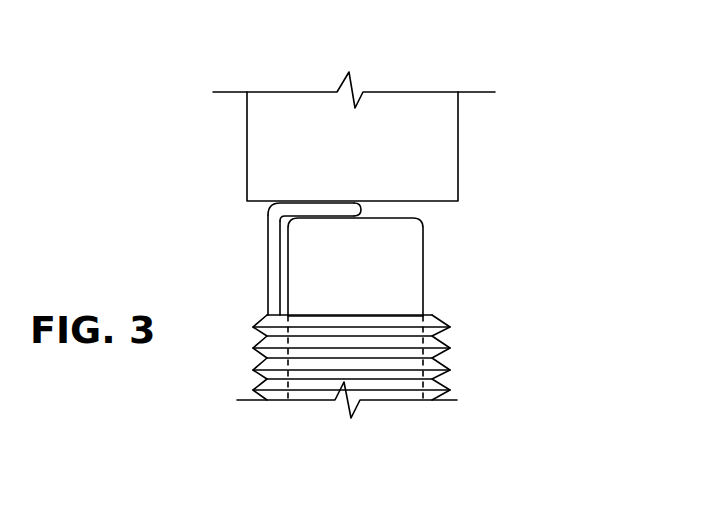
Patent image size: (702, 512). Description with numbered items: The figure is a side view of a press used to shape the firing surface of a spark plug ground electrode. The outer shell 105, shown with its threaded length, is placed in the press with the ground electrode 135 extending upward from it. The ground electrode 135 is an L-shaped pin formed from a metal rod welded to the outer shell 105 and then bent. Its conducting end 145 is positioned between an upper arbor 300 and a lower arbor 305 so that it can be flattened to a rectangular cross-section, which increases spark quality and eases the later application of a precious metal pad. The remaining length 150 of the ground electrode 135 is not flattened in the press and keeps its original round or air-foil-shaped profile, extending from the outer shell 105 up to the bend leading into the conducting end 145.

The upper arbor 300 is at (458, 170).
The ground electrode 135 is at (268, 213).
The conducting end 145 is at (361, 208).
The remaining length 150 is at (268, 273).
The lower arbor 305 is at (423, 268).
The outer shell 105 is at (255, 378).